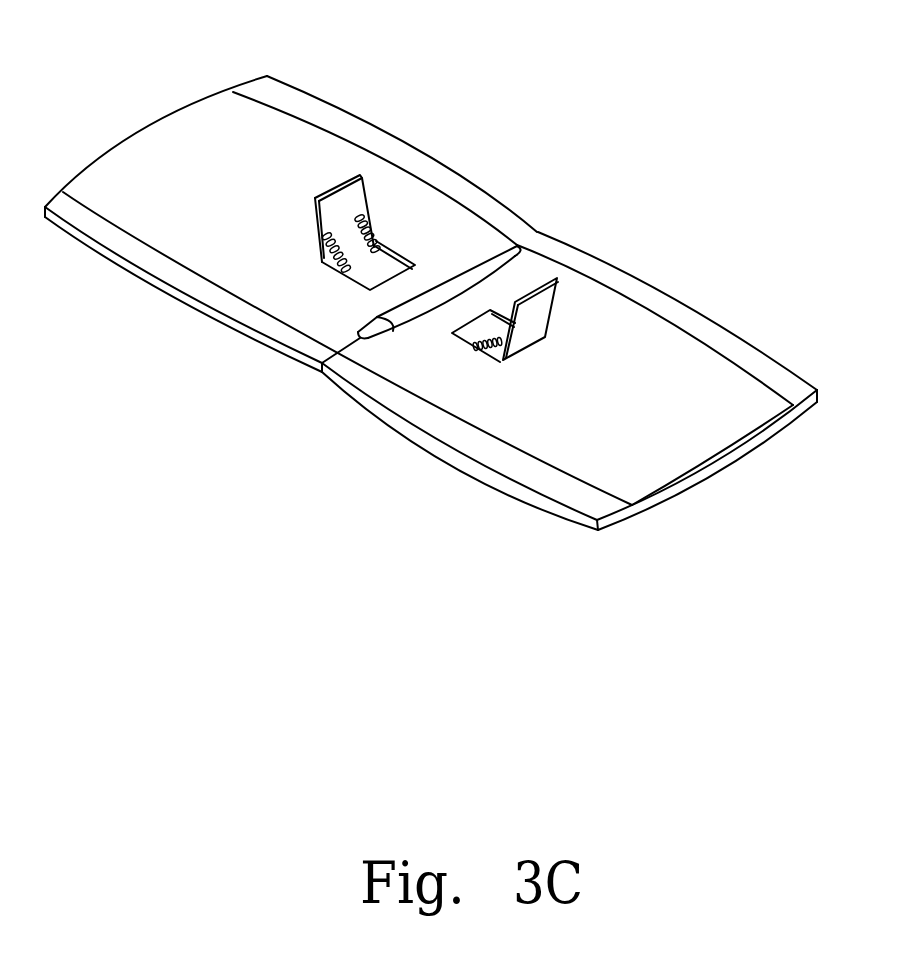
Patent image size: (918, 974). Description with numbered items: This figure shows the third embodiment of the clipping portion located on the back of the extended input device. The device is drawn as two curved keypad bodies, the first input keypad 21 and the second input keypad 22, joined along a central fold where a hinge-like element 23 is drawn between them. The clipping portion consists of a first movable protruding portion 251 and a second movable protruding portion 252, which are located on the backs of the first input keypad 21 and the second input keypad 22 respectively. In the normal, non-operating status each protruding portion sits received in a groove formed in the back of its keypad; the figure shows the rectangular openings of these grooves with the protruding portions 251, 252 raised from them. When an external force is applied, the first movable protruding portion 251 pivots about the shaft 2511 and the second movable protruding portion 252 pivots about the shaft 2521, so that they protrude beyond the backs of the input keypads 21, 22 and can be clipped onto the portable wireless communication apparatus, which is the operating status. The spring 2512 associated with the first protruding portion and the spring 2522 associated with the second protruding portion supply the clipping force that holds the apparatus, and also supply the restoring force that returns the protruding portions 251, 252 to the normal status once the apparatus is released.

The first input keypad 21 is at (714, 387).
The second input keypad 22 is at (215, 147).
The hinge shaft roller 23 is at (470, 277).
The first movable protruding portion 251 is at (543, 308).
The shaft 2511 is at (528, 350).
The spring 2512 is at (475, 350).
The second movable protruding portion 252 is at (338, 208).
The shaft 2521 is at (331, 265).
The spring 2522 is at (370, 227).